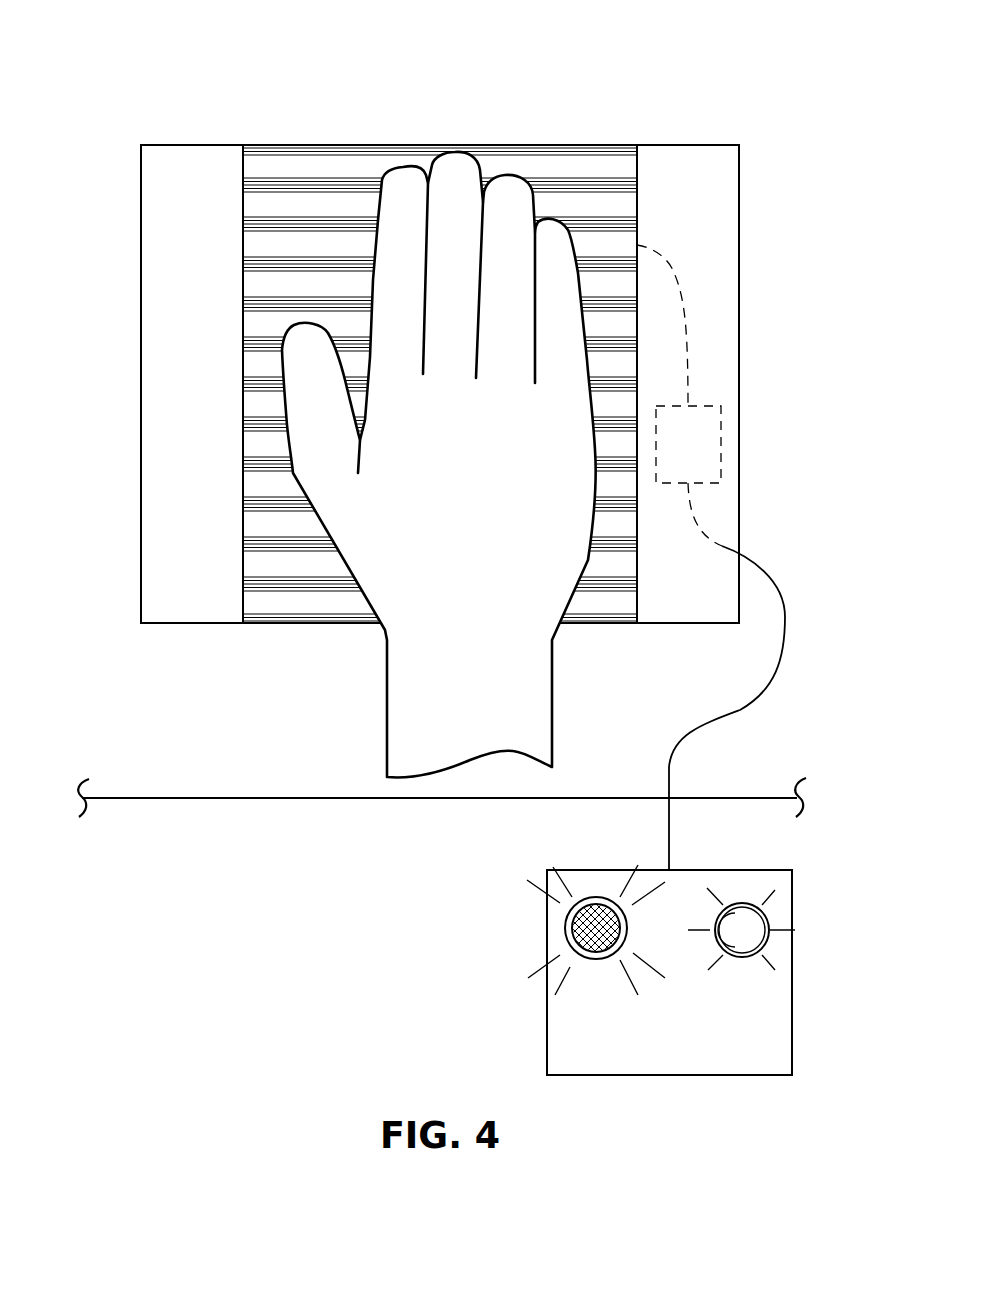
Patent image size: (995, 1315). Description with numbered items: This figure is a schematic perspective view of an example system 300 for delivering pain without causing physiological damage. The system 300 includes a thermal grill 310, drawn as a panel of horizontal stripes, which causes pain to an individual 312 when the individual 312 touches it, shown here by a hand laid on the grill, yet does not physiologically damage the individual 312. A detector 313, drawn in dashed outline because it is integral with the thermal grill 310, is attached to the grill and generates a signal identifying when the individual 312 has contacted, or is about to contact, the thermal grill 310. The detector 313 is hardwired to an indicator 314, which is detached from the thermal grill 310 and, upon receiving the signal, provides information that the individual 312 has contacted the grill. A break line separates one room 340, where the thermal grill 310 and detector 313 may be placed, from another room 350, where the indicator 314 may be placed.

The system 300 is at (644, 79).
The thermal grill 310 is at (660, 213).
The individual 312 is at (528, 712).
The detector 313 is at (700, 452).
The indicator 314 is at (793, 973).
The room 340 is at (258, 746).
The room 350 is at (258, 874).